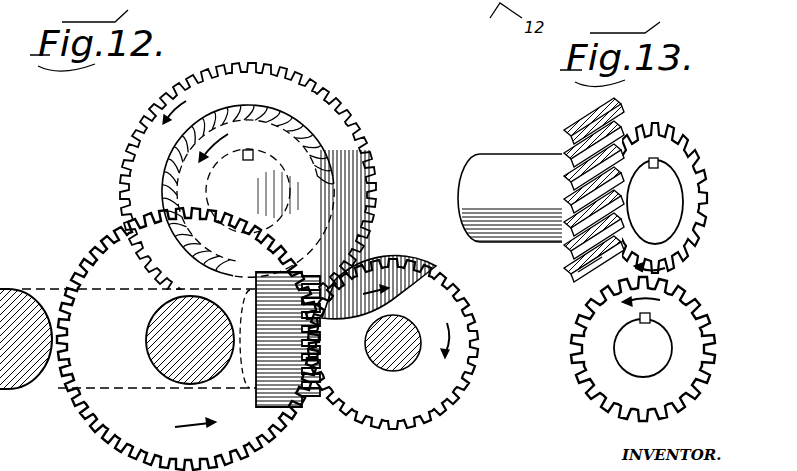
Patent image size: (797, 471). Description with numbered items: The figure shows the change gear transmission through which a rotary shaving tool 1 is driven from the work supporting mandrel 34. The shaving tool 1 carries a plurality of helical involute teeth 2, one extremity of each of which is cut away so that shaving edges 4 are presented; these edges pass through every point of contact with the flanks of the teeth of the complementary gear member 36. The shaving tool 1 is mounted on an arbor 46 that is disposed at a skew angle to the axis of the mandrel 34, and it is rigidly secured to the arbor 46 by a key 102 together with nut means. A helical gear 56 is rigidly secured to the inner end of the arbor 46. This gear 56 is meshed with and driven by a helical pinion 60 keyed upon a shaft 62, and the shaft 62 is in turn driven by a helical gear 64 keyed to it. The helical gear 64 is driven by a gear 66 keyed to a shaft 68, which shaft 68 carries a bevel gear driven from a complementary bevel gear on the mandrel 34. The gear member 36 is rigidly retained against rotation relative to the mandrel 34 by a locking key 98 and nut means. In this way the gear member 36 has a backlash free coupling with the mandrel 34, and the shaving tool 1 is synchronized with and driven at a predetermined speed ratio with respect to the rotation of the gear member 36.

In FIG. 12, the shaving tool 1 is at (263, 106).
In FIG. 13, the shaving tool 1 is at (679, 131).
In FIG. 13, the helical involute teeth 2 is at (592, 130).
In FIG. 13, the shaving edges 4 is at (585, 243).
In FIG. 12, the mandrel 34 is at (22, 292).
In FIG. 13, the mandrel 34 is at (670, 362).
In FIG. 12, the gear member 36 is at (292, 423).
In FIG. 13, the gear member 36 is at (693, 292).
In FIG. 12, the arbor 46 is at (282, 180).
In FIG. 13, the arbor 46 is at (510, 163).
In FIG. 12, the helical gear 56 is at (330, 92).
In FIG. 12, the helical pinion 60 is at (400, 258).
In FIG. 12, the shaft 62 is at (408, 366).
In FIG. 12, the helical gear 64 is at (462, 332).
In FIG. 12, the gear 66 is at (108, 246).
In FIG. 12, the shaft 68 is at (178, 372).
In FIG. 13, the locking key 98 is at (651, 318).
In FIG. 13, the key 102 is at (659, 161).